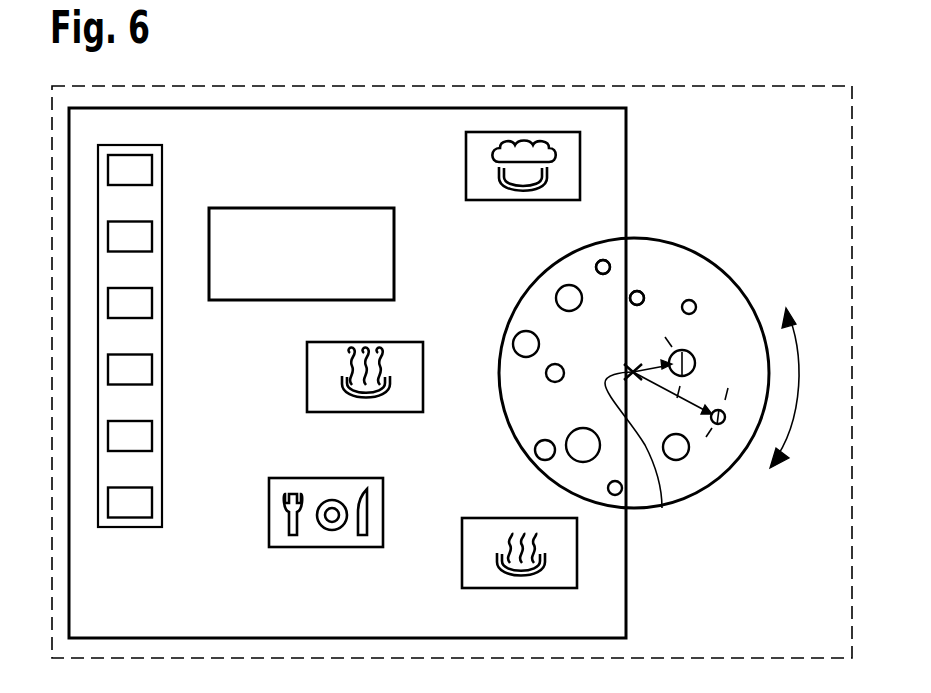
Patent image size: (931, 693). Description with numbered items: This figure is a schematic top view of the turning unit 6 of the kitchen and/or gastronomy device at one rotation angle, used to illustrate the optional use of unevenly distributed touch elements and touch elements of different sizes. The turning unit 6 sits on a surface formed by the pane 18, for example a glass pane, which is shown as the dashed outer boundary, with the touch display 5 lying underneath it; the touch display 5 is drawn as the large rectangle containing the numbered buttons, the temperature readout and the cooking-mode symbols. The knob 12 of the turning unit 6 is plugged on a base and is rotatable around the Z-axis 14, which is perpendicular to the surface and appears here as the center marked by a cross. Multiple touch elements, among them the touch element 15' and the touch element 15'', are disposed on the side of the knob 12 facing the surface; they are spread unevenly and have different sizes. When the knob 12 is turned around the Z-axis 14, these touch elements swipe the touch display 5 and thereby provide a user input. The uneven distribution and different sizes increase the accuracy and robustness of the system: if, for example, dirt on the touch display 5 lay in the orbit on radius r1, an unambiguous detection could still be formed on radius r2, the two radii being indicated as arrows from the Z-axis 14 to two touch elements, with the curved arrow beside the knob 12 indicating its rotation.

The touch display 5 is at (389, 108).
The turning unit 6 is at (648, 222).
The pane 18 is at (830, 86).
The touch element 15' is at (676, 225).
The touch element 15'' is at (726, 264).
The radius r1 is at (633, 372).
The radius r2 is at (667, 393).
The knob 12 is at (728, 473).
The Z-axis 14 is at (662, 508).